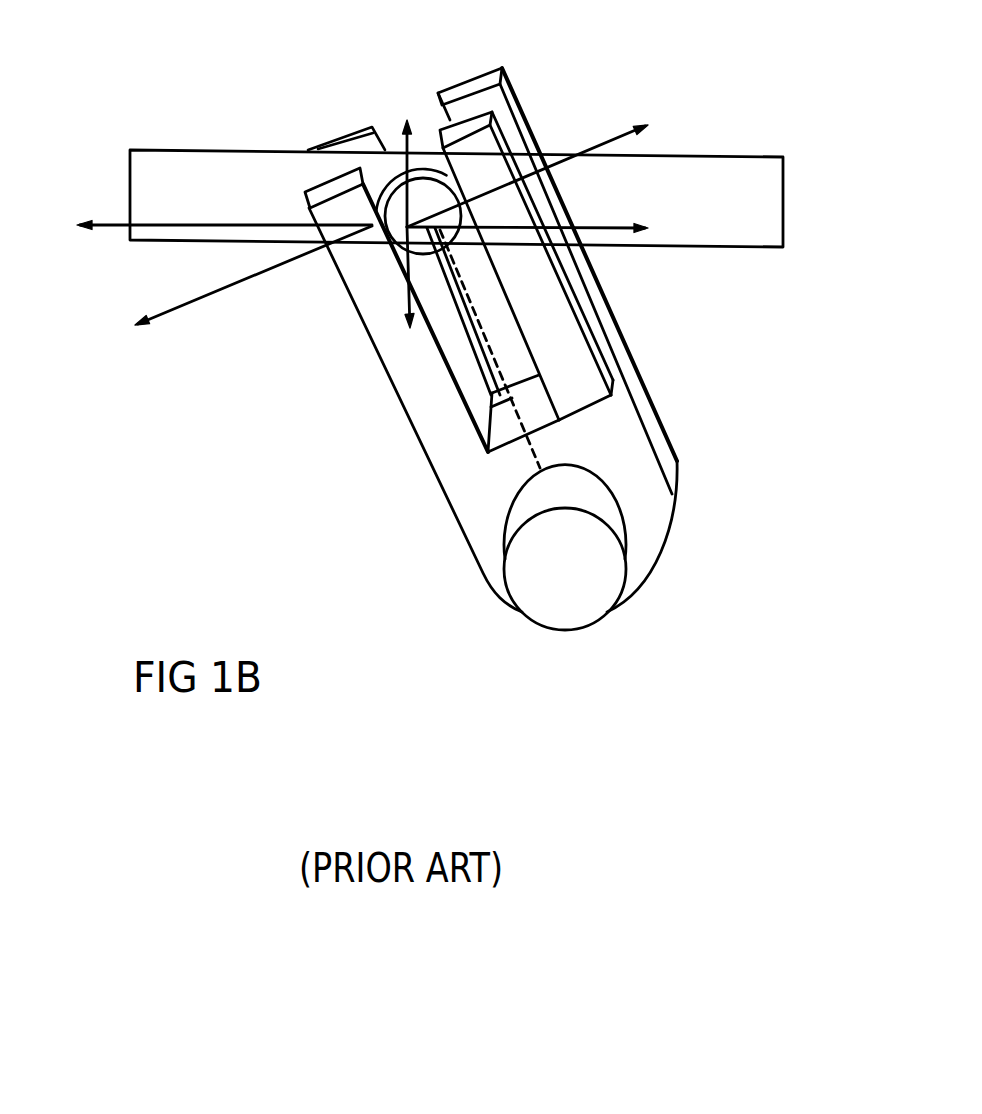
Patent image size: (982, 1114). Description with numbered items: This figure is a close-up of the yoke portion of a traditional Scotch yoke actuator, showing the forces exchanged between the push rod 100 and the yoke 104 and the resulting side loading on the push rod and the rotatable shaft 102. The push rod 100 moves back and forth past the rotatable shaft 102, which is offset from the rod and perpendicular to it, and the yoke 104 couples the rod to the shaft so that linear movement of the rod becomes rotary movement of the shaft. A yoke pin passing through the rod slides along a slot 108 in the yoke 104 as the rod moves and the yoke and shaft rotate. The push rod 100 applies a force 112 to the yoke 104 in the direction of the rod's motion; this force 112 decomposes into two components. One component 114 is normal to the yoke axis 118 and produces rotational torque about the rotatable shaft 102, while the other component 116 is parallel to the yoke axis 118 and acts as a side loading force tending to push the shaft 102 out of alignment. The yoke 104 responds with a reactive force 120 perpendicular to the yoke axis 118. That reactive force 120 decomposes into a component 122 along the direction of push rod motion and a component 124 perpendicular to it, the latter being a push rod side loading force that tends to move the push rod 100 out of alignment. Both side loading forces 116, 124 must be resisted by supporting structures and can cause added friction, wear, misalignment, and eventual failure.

The push rod 100 is at (190, 152).
The rotatable shaft 102 is at (534, 604).
The yoke 104 is at (468, 547).
The slot 108 is at (522, 362).
The force 112 is at (110, 222).
The component normal to the yoke axis 114 is at (170, 305).
The component parallel to the yoke axis 116 is at (390, 277).
The yoke axis 118 is at (488, 430).
The reactive force 120 is at (626, 120).
The component in the direction of push rod motion 122 is at (614, 235).
The push rod side loading force 124 is at (405, 128).